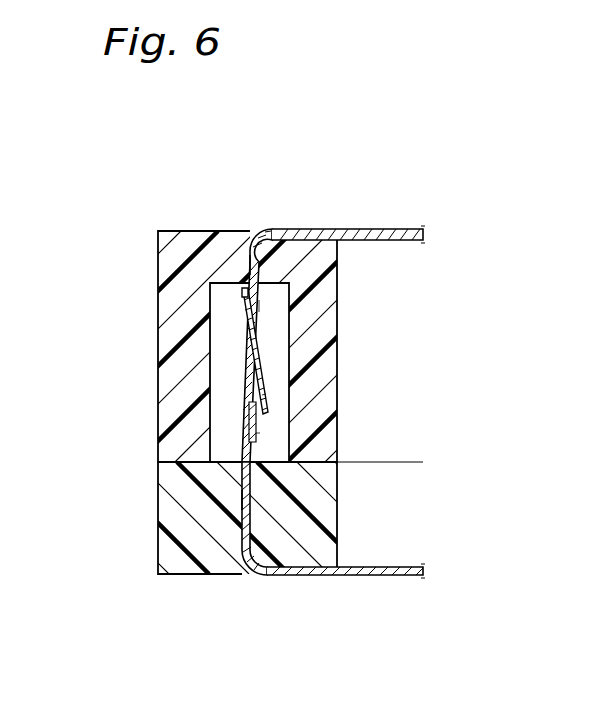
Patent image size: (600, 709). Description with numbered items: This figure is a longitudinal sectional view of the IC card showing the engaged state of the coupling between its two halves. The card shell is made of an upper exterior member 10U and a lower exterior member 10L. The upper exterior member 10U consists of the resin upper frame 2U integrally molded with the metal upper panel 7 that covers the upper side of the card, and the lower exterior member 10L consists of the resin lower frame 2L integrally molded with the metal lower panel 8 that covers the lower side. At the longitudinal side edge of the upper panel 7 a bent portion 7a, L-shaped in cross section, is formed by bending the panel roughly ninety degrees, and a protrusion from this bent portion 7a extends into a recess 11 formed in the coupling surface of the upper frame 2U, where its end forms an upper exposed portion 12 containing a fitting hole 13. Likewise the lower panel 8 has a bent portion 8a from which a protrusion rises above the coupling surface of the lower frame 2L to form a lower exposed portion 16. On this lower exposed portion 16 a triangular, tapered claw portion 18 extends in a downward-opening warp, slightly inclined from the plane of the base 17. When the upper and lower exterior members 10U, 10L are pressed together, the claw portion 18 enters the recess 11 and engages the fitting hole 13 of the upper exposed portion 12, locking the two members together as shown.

The upper exterior member 10U is at (327, 286).
The lower exterior member 10L is at (321, 570).
The upper frame 2U is at (230, 238).
The lower frame 2L is at (226, 577).
The upper panel 7 is at (375, 229).
The lower panel 8 is at (346, 595).
The bent portion 7a is at (250, 263).
The bent portion 8a is at (243, 500).
The recess 11 is at (283, 336).
The exposed portion 12 is at (260, 433).
The fitting hole 13 is at (262, 308).
The exposed portion 16 is at (240, 448).
The base 17 is at (246, 297).
The claw portion 18 is at (268, 390).